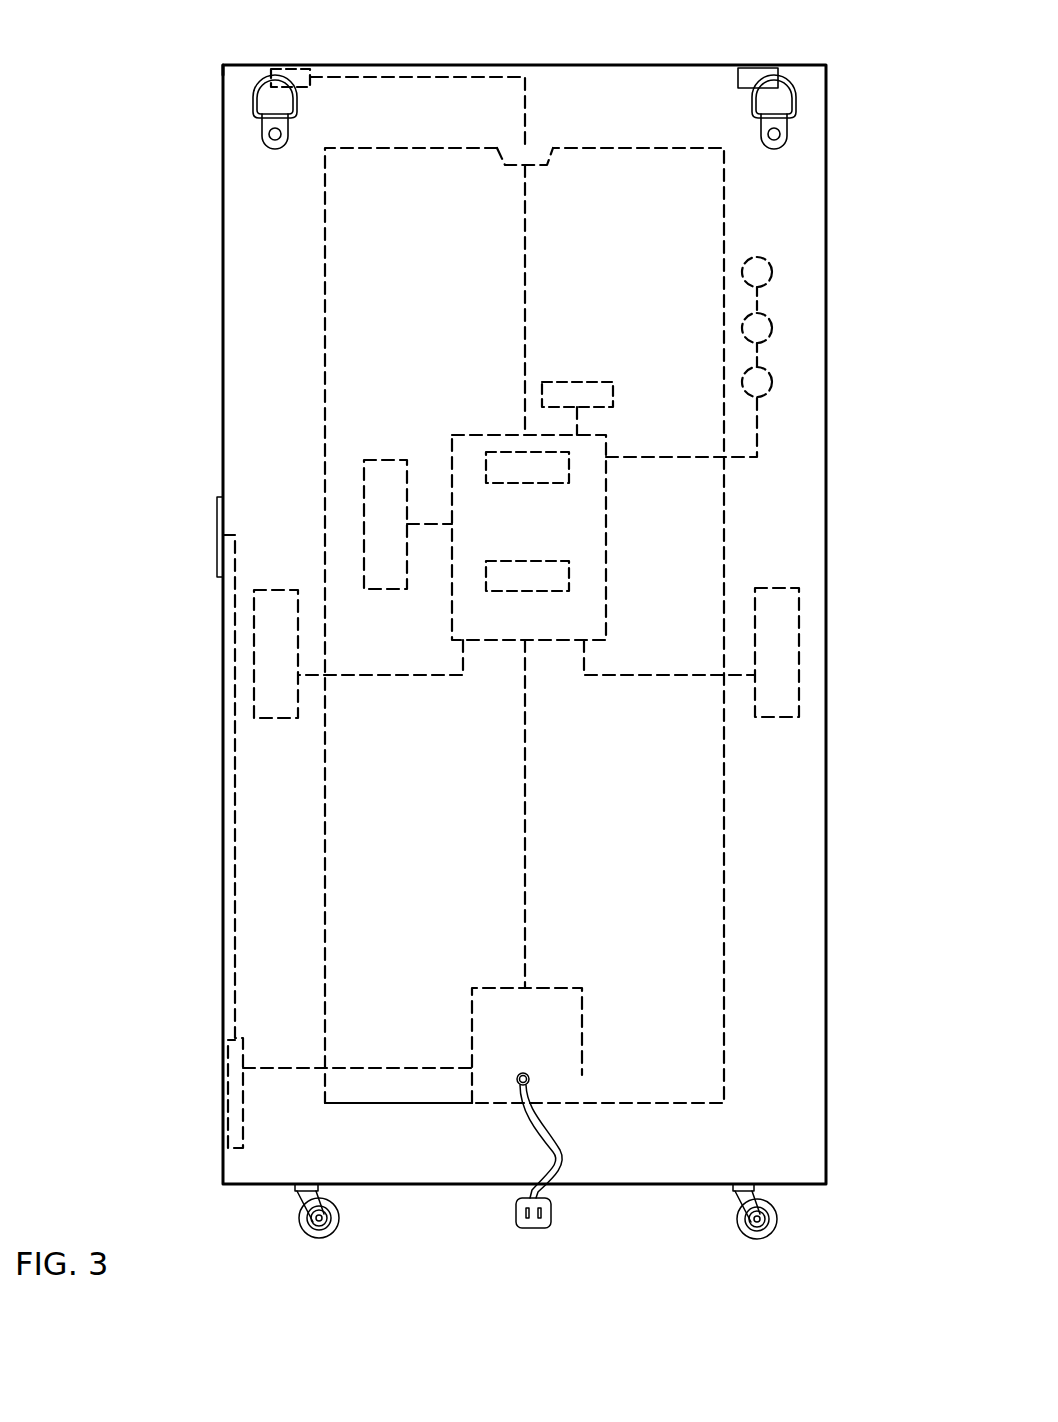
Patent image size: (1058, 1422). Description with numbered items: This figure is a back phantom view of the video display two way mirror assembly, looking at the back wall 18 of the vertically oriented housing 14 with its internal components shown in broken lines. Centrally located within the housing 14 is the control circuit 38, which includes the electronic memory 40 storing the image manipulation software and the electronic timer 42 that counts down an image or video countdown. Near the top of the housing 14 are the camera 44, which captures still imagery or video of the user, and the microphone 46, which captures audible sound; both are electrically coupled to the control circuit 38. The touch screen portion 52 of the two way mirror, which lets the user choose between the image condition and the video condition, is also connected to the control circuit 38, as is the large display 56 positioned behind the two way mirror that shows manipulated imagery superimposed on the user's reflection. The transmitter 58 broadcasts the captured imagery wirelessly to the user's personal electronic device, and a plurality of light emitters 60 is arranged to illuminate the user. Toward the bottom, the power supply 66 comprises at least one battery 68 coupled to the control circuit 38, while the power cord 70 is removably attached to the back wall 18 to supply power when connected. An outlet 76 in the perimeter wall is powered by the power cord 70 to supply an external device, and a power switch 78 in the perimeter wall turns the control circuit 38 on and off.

The housing 14 is at (222, 67).
The back wall 18 is at (802, 968).
The control circuit 38 is at (606, 523).
The electronic memory 40 is at (486, 458).
The electronic timer 42 is at (486, 578).
The camera 44 is at (533, 163).
The microphone 46 is at (301, 75).
The touch screen portion 52 is at (364, 466).
The display 56 is at (724, 1037).
The transmitter 58 is at (613, 395).
The light emitters 60 is at (765, 264).
The power supply 66 is at (472, 1090).
The battery 68 is at (582, 1077).
The power cord 70 is at (560, 1160).
The outlet 76 is at (231, 1163).
The power switch 78 is at (217, 518).